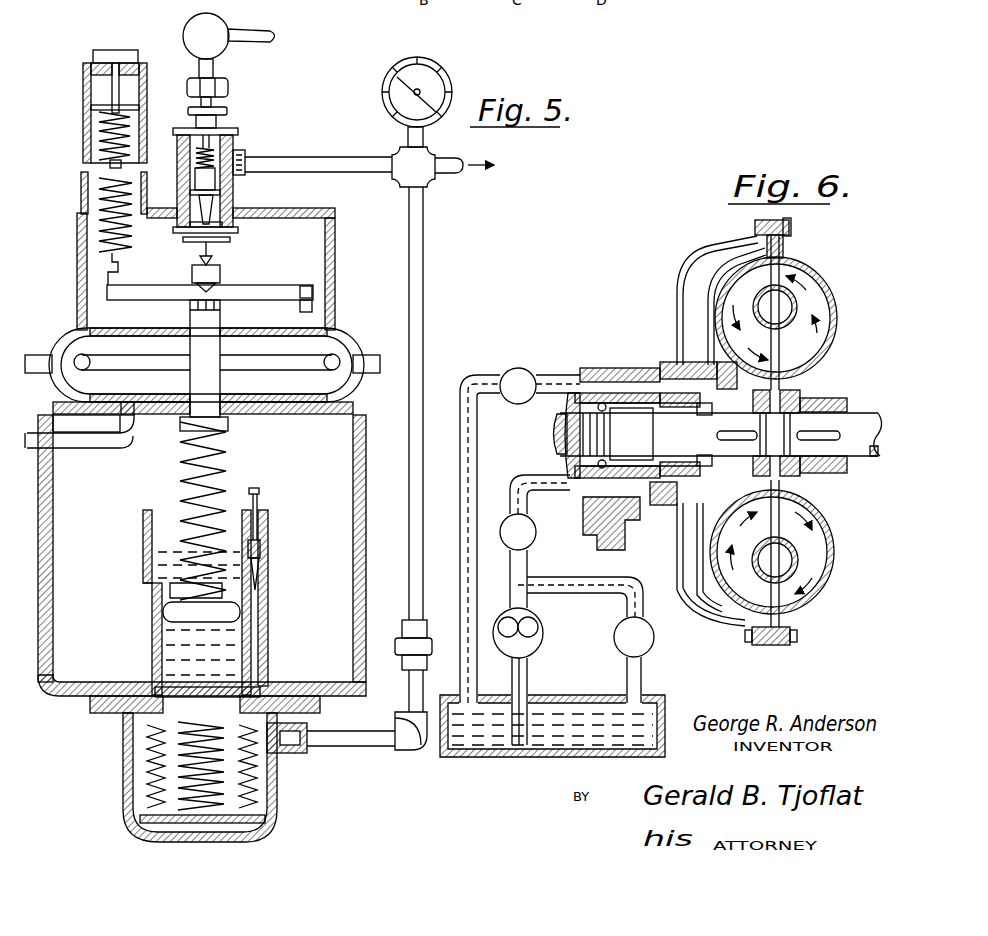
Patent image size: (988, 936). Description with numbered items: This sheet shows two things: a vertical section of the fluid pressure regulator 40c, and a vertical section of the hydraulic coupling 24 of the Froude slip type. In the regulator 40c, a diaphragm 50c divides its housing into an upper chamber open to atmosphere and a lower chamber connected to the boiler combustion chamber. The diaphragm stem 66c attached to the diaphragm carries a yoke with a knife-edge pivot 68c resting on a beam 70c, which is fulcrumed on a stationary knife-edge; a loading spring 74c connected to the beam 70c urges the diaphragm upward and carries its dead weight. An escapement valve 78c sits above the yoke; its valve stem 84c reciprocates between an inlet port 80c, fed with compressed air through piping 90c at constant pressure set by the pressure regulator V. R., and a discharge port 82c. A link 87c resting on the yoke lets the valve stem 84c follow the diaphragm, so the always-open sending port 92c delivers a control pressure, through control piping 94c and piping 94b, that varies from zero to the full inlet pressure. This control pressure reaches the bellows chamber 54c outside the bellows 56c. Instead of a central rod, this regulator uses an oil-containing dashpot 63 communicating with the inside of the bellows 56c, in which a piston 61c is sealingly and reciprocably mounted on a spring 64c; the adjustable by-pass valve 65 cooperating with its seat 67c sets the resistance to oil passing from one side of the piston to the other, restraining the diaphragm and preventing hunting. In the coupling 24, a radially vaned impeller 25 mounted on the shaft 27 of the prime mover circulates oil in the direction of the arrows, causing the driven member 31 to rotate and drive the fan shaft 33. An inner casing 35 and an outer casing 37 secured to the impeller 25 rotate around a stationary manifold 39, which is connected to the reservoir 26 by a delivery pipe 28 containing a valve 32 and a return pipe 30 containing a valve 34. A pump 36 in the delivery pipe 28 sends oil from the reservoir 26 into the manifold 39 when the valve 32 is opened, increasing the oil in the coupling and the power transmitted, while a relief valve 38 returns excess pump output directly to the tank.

In FIG. 5, the piping 90c is at (262, 26).
In FIG. 5, the inlet port 80c is at (232, 132).
In FIG. 5, the escapement valve 78c is at (316, 145).
In FIG. 5, the sending port 92c is at (250, 161).
In FIG. 5, the valve stem 84c is at (178, 176).
In FIG. 5, the discharge port 82c is at (222, 210).
In FIG. 5, the regulator 40c is at (336, 198).
In FIG. 5, the control piping 94c is at (392, 177).
In FIG. 5, the piping 94b is at (425, 205).
In FIG. 5, the link 87c is at (212, 251).
In FIG. 5, the loading spring 74c is at (97, 243).
In FIG. 5, the knife-edge pivot 68c is at (192, 273).
In FIG. 5, the beam 70c is at (238, 291).
In FIG. 5, the diaphragm 50c is at (344, 341).
In FIG. 5, the diaphragm stem 66c is at (215, 384).
In FIG. 5, the spring 64c is at (180, 465).
In FIG. 5, the adjustable by-pass valve 65 is at (262, 492).
In FIG. 5, the seat 67c is at (269, 584).
In FIG. 5, the dashpot 63 is at (152, 600).
In FIG. 5, the piston 61c is at (180, 612).
In FIG. 5, the bellows 56c is at (258, 774).
In FIG. 5, the bellows chamber 54c is at (278, 810).
In FIG. 6, the hydraulic coupling 24 is at (694, 430).
In FIG. 6, the impeller 25 is at (833, 290).
In FIG. 6, the reservoir 26 is at (665, 713).
In FIG. 6, the shaft 27 is at (863, 408).
In FIG. 6, the delivery pipe 28 is at (541, 476).
In FIG. 6, the return pipe 30 is at (466, 380).
In FIG. 6, the driven member 31 is at (781, 272).
In FIG. 6, the valve 32 is at (508, 517).
In FIG. 6, the fan shaft 33 is at (555, 425).
In FIG. 6, the valve 34 is at (524, 369).
In FIG. 6, the inner casing 35 is at (737, 263).
In FIG. 6, the pump 36 is at (543, 648).
In FIG. 6, the outer casing 37 is at (705, 268).
In FIG. 6, the relief valve 38 is at (655, 640).
In FIG. 6, the manifold 39 is at (657, 383).